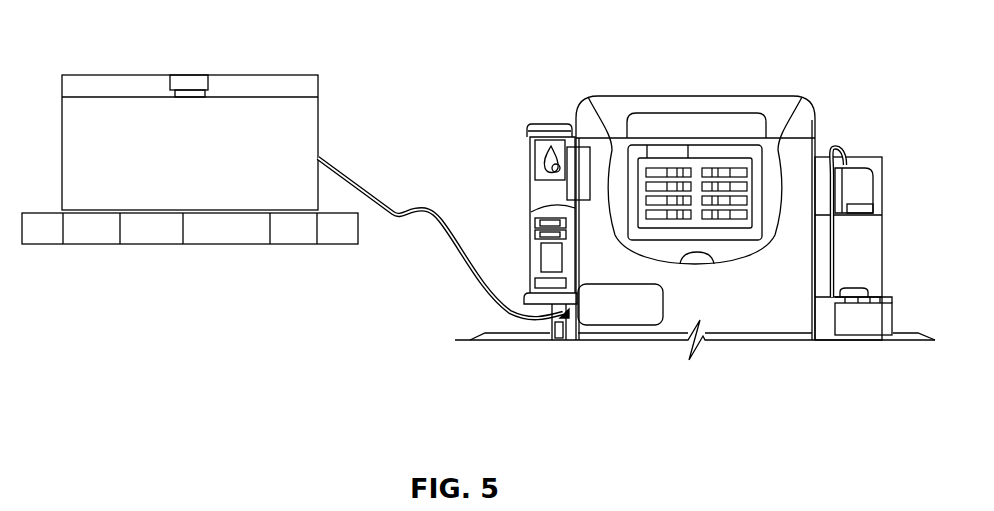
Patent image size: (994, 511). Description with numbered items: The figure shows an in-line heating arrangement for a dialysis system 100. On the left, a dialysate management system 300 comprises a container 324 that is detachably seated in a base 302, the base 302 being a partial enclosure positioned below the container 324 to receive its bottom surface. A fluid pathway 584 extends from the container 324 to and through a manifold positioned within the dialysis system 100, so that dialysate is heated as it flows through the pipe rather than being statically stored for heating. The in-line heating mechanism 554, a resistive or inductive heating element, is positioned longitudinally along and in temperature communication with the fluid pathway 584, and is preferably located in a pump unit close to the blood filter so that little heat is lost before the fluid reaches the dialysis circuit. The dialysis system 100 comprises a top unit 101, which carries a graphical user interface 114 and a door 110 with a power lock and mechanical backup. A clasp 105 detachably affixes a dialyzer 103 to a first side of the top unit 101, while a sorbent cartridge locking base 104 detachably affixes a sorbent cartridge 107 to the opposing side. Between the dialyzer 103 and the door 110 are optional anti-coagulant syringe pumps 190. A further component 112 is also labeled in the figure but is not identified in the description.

The dialysis system 100 is at (541, 64).
The top unit 101 is at (660, 137).
The dialyzer 103 is at (530, 258).
The sorbent cartridge locking base 104 is at (838, 315).
The clasp 105 is at (538, 205).
The sorbent cartridge 107 is at (858, 280).
The door 110 is at (792, 152).
The housing 112 is at (758, 73).
The graphical user interface 114 is at (612, 150).
The syringe pumps 190 is at (548, 158).
The dialysate management system 300 is at (244, 63).
The base 302 is at (23, 230).
The container 324 is at (62, 116).
The in-line heating mechanism 554 is at (612, 326).
The fluid pathway 584 is at (449, 236).